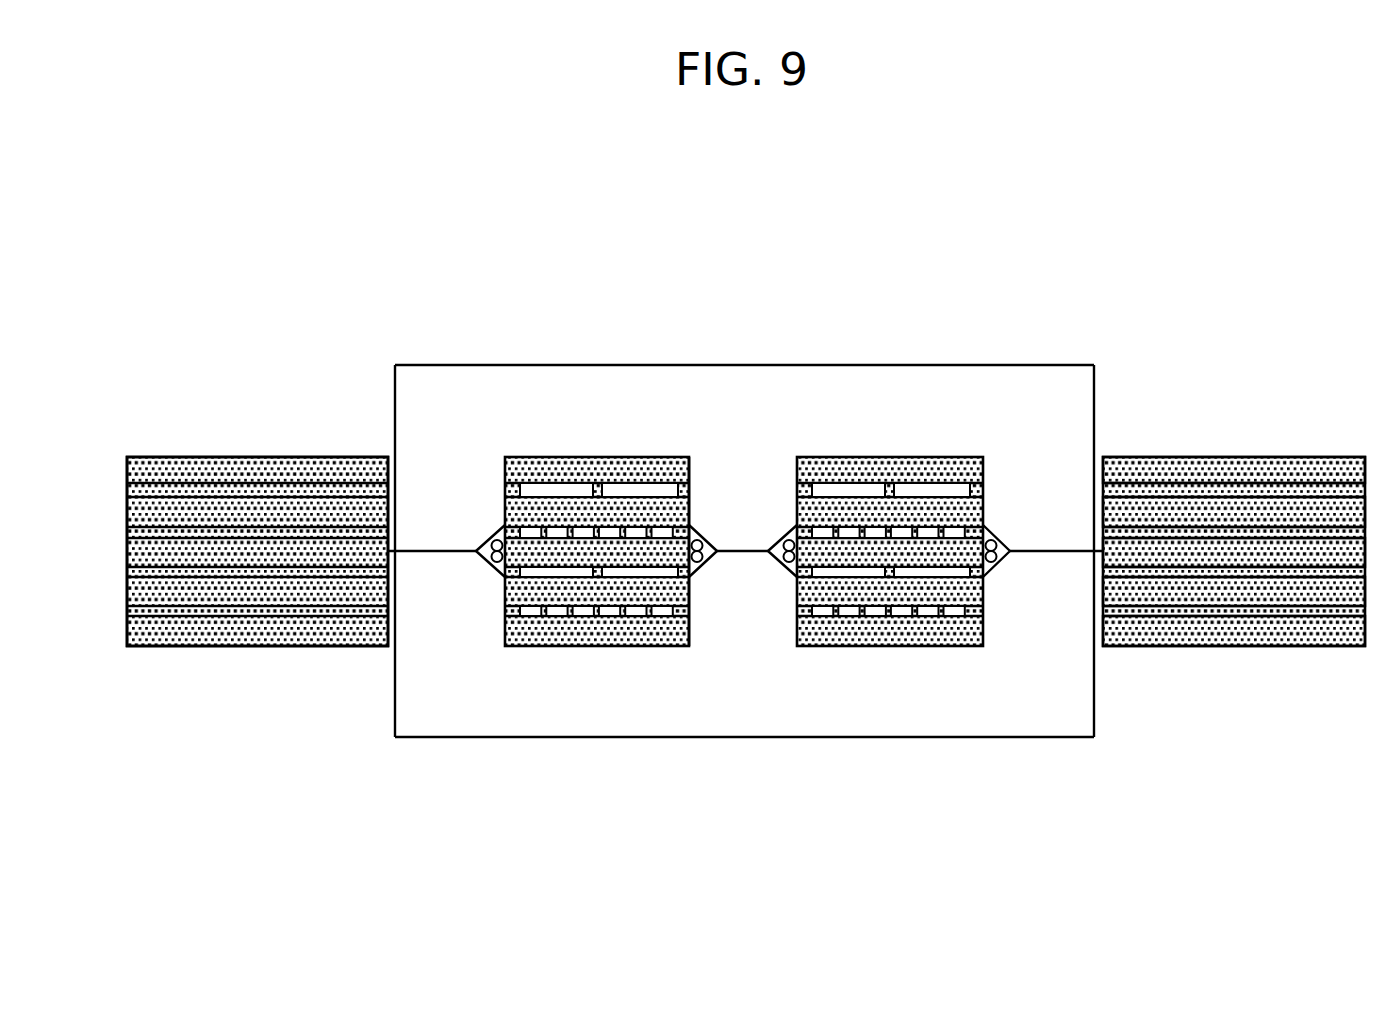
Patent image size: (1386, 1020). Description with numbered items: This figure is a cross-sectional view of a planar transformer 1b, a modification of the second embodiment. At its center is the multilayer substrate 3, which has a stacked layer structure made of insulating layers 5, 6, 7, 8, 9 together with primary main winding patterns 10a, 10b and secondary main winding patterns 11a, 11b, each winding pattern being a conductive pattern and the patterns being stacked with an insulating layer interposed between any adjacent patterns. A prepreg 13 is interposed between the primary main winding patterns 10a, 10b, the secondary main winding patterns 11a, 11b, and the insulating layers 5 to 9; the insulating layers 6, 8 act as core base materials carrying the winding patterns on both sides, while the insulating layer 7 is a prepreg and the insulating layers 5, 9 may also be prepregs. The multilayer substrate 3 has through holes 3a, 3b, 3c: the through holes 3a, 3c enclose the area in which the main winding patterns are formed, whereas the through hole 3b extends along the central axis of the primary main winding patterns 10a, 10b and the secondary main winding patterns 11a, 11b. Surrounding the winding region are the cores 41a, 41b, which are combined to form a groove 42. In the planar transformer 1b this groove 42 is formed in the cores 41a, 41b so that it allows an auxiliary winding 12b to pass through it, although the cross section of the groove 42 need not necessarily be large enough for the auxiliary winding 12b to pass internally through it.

The planar transformer 1b is at (1194, 203).
The multilayer substrate 3 is at (117, 457).
The through hole 3a is at (387, 450).
The through hole 3b is at (708, 455).
The through hole 3c is at (1102, 450).
The insulating layer 5 is at (1117, 630).
The insulating layer 6 is at (1140, 590).
The insulating layer 7 is at (1220, 552).
The insulating layer 8 is at (1160, 513).
The insulating layer 9 is at (1123, 470).
The primary main winding pattern 10a is at (530, 613).
The primary main winding pattern 10b is at (612, 532).
The secondary main winding pattern 11a is at (575, 572).
The secondary main winding pattern 11b is at (640, 492).
The auxiliary winding 12b is at (708, 540).
The prepreg 13 is at (685, 565).
The core 41a is at (443, 364).
The core 41b is at (423, 740).
The groove 42 is at (697, 527).